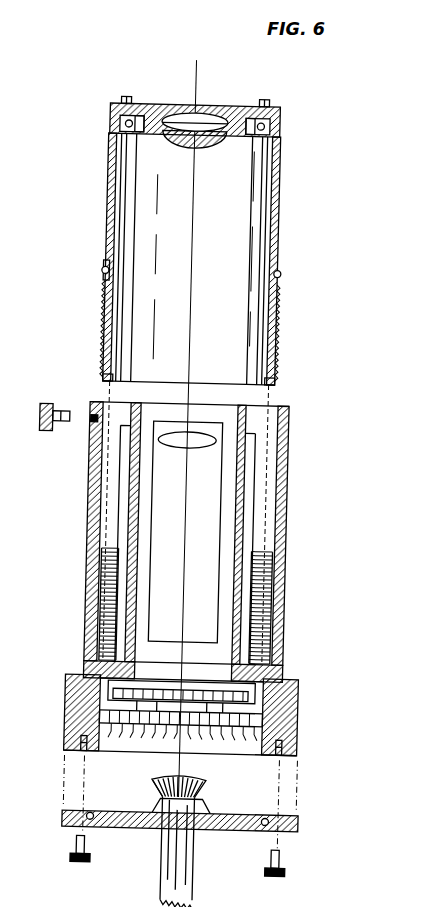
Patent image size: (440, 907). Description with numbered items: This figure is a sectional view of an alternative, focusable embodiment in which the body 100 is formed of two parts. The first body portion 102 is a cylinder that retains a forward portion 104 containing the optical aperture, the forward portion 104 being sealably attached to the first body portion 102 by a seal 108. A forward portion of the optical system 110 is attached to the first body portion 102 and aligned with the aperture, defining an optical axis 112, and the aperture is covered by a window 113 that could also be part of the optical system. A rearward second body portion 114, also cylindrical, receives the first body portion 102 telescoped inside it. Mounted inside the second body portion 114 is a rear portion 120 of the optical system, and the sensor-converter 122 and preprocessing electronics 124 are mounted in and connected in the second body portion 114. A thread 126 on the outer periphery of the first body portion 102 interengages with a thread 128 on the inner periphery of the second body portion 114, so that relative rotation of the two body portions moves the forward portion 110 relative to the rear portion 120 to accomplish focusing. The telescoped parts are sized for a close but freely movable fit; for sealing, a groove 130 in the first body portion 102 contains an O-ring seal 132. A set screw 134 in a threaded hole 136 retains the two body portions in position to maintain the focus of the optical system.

The body 100 is at (294, 462).
The first body portion 102 is at (276, 198).
The forward portion 104 is at (255, 106).
The seal 108 is at (262, 162).
The forward portion of the optical system 110 is at (206, 149).
The optical axis 112 is at (187, 92).
The window 113 is at (199, 109).
The second body portion 114 is at (291, 525).
The rear portion of the optical system 120 is at (228, 567).
The sensor-converter 122 is at (290, 681).
The preprocessing electronics 124 is at (289, 407).
The thread 126 is at (275, 311).
The thread 128 is at (106, 581).
The groove 130 is at (101, 264).
The O-ring seal 132 is at (98, 273).
The set screw 134 is at (40, 408).
The threaded hole 136 is at (90, 420).